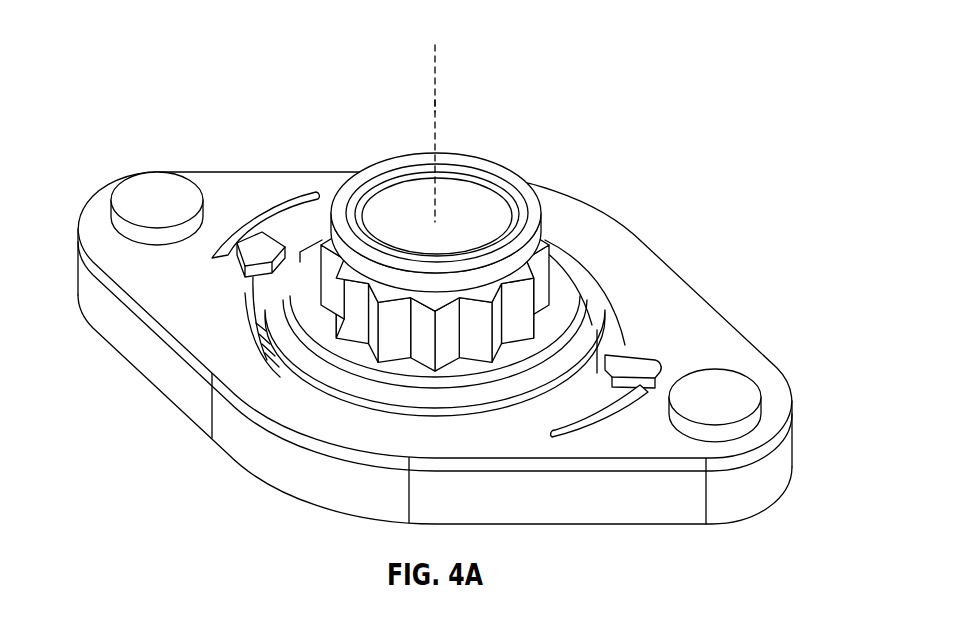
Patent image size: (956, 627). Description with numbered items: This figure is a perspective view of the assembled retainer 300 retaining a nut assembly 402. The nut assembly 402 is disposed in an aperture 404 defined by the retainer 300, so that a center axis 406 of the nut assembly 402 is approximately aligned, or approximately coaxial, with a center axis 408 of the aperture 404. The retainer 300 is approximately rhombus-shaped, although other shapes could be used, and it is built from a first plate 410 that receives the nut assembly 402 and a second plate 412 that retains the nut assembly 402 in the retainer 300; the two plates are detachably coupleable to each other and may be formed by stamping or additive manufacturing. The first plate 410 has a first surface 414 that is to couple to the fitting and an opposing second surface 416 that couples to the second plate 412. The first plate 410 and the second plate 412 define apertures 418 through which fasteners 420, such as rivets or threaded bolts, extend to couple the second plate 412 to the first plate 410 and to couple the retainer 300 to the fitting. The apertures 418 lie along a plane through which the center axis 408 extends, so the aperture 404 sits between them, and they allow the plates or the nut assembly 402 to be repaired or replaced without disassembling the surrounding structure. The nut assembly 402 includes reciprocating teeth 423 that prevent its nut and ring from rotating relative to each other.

The retainer 300 is at (447, 313).
The nut assembly 402 is at (495, 140).
The aperture 404 is at (580, 258).
The center axis 406 is at (435, 112).
The center axis 408 is at (437, 75).
The first plate 410 is at (428, 377).
The second plate 412 is at (703, 325).
The first surface 414 is at (160, 393).
The second surface 416 is at (128, 300).
The apertures 418 is at (170, 163).
The fasteners 420 is at (140, 188).
The teeth 423 is at (408, 366).